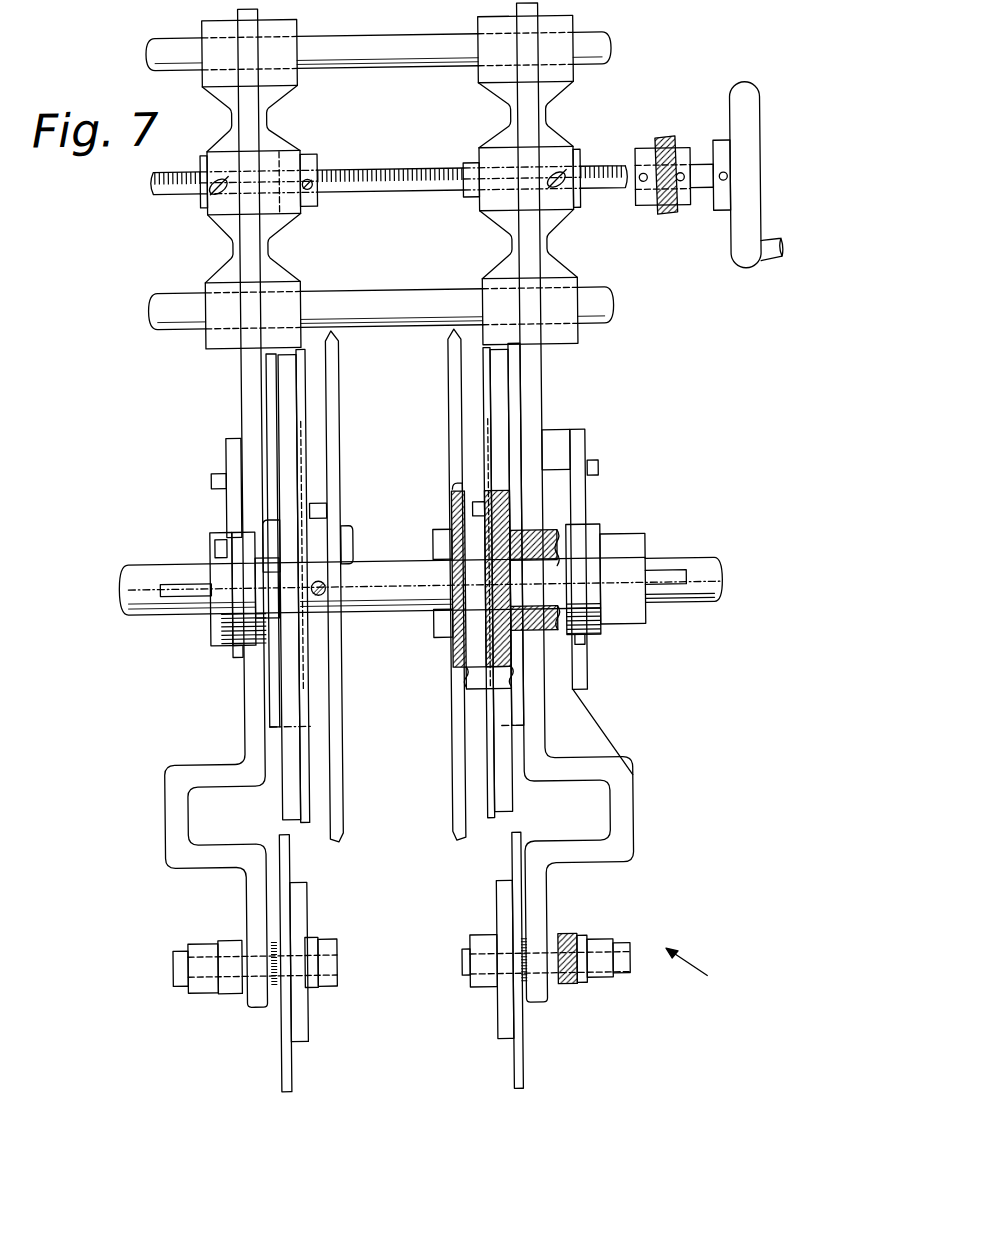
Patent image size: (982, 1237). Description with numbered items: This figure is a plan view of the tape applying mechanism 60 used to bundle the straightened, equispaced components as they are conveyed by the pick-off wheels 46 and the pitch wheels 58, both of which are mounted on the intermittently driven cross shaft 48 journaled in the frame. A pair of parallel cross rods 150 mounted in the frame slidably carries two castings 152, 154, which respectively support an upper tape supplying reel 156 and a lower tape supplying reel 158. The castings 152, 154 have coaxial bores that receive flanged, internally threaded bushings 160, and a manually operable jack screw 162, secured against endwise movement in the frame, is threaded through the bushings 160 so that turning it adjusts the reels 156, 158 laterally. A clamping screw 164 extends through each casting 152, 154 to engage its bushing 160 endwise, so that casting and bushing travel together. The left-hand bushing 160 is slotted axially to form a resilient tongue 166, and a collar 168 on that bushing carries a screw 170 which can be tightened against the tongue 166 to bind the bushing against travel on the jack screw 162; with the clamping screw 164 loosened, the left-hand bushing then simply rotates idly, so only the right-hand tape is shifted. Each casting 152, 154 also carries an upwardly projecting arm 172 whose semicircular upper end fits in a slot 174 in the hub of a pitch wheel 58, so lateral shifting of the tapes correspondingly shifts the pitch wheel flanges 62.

The pick-off wheel 46 is at (450, 360).
The cross shaft 48 is at (700, 562).
The pitch wheel 58 is at (304, 826).
The tape applying mechanism 60 is at (698, 966).
The pitch wheel flange 62 is at (282, 806).
The cross rod 150 is at (390, 67).
The casting 152 is at (243, 384).
The casting 154 is at (543, 373).
The upper tape supplying reel 156 is at (304, 1040).
The lower tape supplying reel 158 is at (489, 430).
The bushing 160 is at (204, 165).
The jack screw 162 is at (406, 191).
The clamping screw 164 is at (222, 180).
The resilient tongue 166 is at (284, 170).
The collar 168 is at (321, 162).
The screw 170 is at (316, 188).
The arm 172 is at (227, 518).
The slot 174 is at (236, 650).